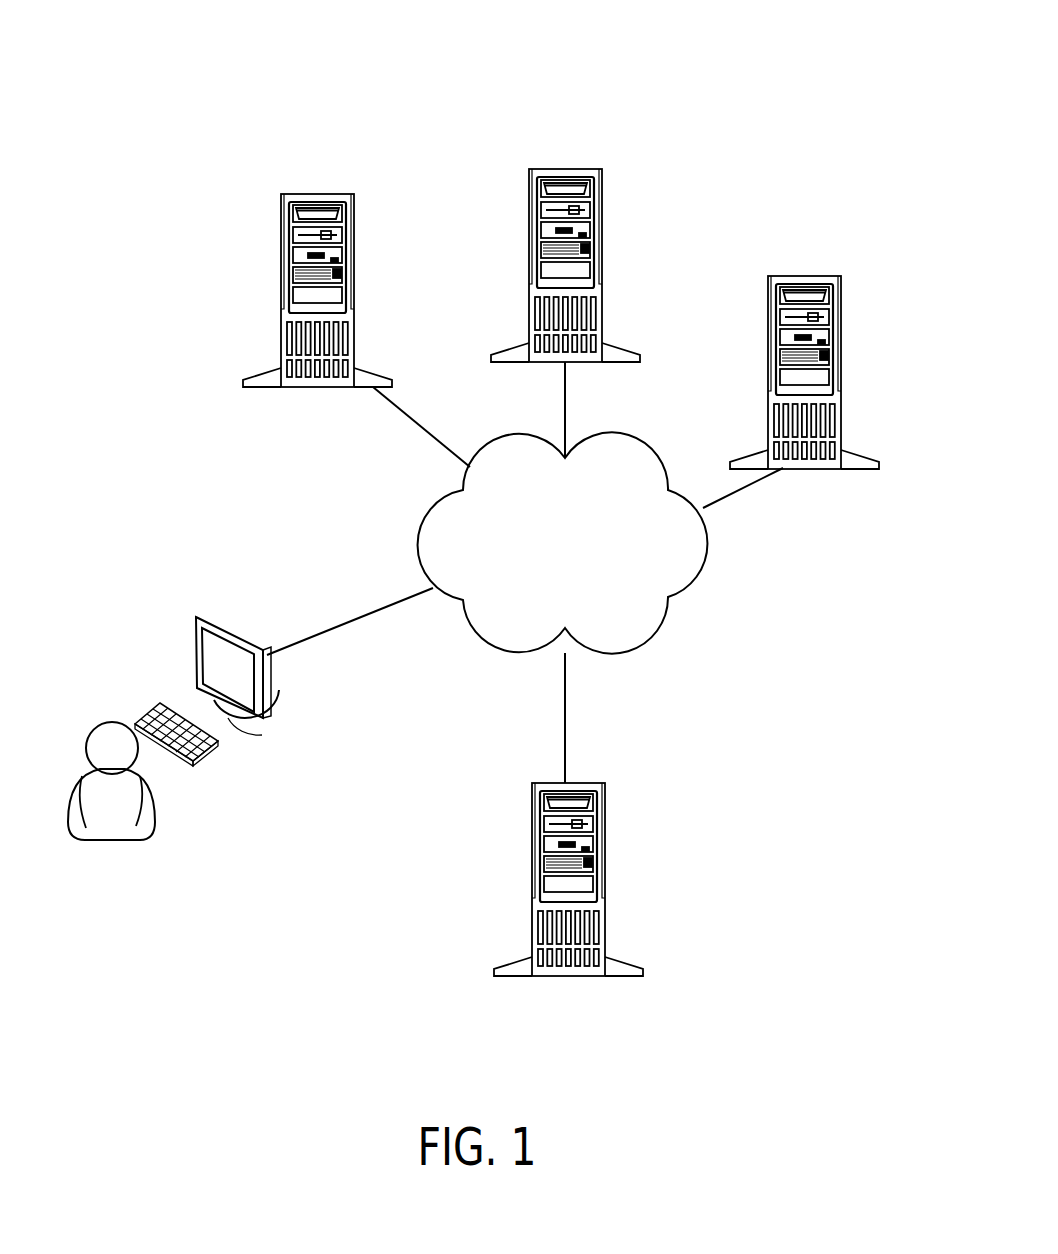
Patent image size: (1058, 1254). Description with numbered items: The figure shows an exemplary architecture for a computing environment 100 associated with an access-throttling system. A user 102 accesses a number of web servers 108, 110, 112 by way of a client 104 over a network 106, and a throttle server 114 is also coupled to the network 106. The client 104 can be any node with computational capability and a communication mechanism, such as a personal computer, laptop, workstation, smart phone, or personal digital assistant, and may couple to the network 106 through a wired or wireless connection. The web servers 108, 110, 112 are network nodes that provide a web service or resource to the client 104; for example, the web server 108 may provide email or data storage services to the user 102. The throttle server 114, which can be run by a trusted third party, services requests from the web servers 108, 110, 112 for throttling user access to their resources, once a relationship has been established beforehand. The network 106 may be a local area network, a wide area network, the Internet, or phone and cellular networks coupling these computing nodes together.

The computing environment 100 is at (749, 70).
The user 102 is at (113, 841).
The client 104 is at (250, 740).
The network 106 is at (418, 533).
The web server 108 is at (316, 193).
The web server 110 is at (565, 168).
The web server 112 is at (803, 275).
The throttle server 114 is at (570, 978).